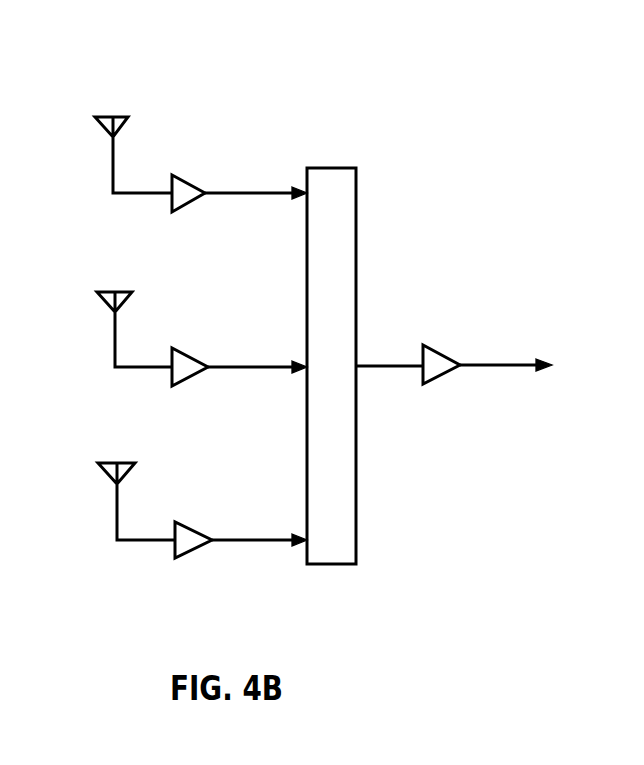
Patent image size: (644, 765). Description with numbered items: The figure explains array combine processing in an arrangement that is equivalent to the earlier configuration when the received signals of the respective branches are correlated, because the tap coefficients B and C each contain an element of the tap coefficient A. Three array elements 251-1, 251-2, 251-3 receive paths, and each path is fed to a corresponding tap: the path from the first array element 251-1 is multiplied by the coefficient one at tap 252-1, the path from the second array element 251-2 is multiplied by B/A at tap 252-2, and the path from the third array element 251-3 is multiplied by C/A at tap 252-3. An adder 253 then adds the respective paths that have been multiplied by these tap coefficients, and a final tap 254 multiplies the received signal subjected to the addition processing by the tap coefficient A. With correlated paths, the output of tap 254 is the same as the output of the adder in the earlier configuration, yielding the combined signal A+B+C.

The array element 251-1 is at (113, 117).
The array element 251-2 is at (115, 292).
The array element 251-3 is at (117, 463).
The tap 252-1 is at (193, 188).
The tap 252-2 is at (195, 362).
The tap 252-3 is at (197, 535).
The adder 253 is at (312, 167).
The tap 254 is at (437, 348).